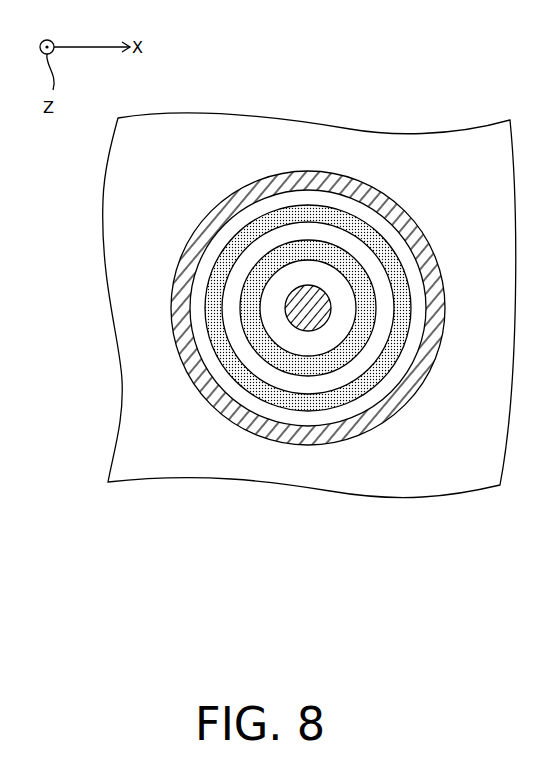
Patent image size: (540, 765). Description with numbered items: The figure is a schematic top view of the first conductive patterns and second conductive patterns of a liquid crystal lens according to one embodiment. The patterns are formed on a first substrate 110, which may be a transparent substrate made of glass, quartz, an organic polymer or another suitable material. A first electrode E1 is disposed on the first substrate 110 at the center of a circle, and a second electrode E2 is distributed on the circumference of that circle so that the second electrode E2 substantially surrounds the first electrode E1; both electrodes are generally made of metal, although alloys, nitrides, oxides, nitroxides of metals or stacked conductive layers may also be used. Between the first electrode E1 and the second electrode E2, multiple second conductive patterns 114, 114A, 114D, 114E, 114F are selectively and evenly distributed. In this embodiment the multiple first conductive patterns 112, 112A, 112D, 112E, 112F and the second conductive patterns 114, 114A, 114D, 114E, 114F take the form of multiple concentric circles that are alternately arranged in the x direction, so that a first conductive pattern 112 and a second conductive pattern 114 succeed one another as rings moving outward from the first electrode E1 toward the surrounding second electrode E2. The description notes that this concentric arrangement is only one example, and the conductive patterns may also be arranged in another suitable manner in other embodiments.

The first substrate 110 is at (337, 127).
The first conductive pattern 112 is at (348, 446).
The first conductive pattern 112A is at (348, 446).
The first conductive pattern 112D is at (348, 446).
The first conductive pattern 112E is at (348, 446).
The first conductive pattern 112F is at (345, 305).
The second conductive pattern 114 is at (304, 437).
The second conductive pattern 114A is at (304, 437).
The second conductive pattern 114D is at (304, 437).
The second conductive pattern 114E is at (304, 437).
The second conductive pattern 114F is at (252, 325).
The first electrode E1 is at (303, 333).
The second electrode E2 is at (335, 442).